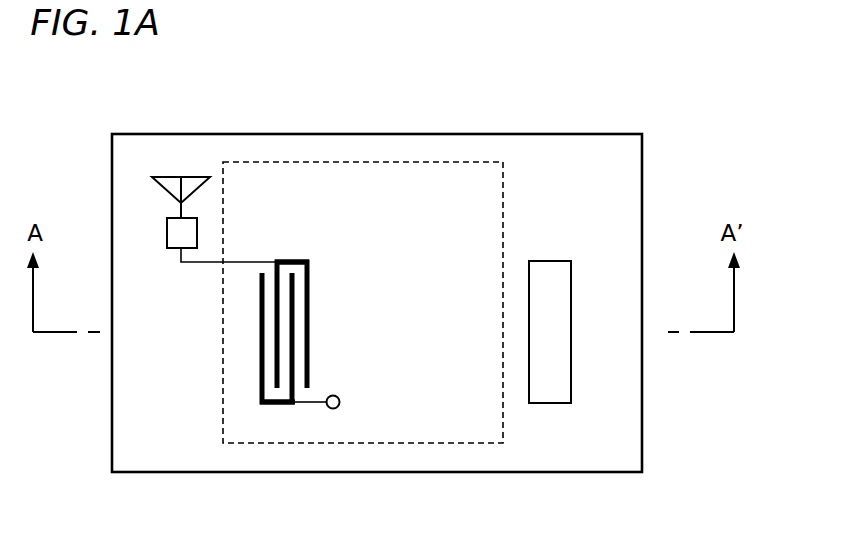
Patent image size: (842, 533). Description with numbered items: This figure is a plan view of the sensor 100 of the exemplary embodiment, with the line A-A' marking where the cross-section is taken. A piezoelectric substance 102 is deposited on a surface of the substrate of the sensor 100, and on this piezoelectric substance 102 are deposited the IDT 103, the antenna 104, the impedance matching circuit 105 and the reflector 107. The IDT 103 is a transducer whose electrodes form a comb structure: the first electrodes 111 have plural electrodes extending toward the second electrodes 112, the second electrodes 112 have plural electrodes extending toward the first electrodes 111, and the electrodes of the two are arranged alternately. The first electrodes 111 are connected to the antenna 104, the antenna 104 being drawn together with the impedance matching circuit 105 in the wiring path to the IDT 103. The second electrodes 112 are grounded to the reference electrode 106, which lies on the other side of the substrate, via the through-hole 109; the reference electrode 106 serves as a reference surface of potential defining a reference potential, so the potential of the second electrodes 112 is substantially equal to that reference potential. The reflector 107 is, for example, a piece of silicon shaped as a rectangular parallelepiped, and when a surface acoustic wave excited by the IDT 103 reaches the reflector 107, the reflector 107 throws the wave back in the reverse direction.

The sensor 100 is at (683, 162).
The piezoelectric substance 102 is at (435, 134).
The IDT (Inter-digital Transducer) 103 is at (327, 359).
The antenna 104 is at (198, 177).
The impedance matching circuit 105 is at (167, 233).
The reference electrode 106 is at (443, 443).
The reflector 107 is at (560, 261).
The through-hole 109 is at (335, 409).
The first electrodes 111 is at (298, 260).
The second electrodes 112 is at (280, 405).